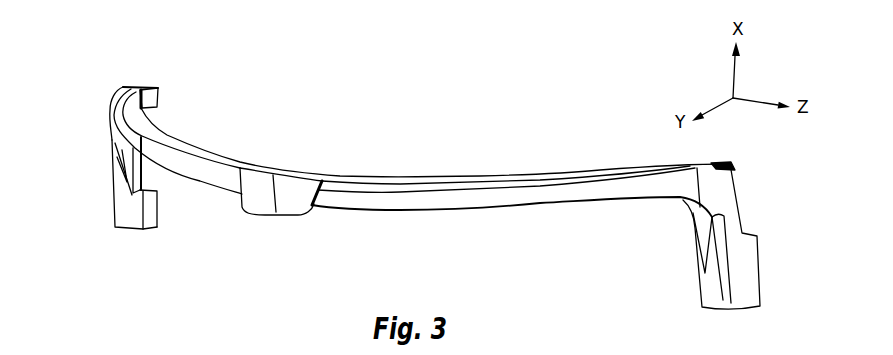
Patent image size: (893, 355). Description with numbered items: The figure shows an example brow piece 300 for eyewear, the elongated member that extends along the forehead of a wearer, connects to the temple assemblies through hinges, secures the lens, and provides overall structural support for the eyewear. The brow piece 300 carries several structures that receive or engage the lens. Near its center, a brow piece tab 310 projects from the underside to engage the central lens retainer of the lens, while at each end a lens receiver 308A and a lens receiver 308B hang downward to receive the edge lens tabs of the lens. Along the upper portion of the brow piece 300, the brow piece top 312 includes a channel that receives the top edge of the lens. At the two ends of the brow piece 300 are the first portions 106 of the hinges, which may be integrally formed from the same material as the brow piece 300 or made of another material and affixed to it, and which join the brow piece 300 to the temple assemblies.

The brow piece 300 is at (106, 40).
The first portions of the hinges 106 is at (158, 97).
The lens receiver 308A is at (698, 222).
The lens receiver 308B is at (112, 190).
The brow piece tab 310 is at (247, 210).
The brow piece top 312 is at (588, 190).